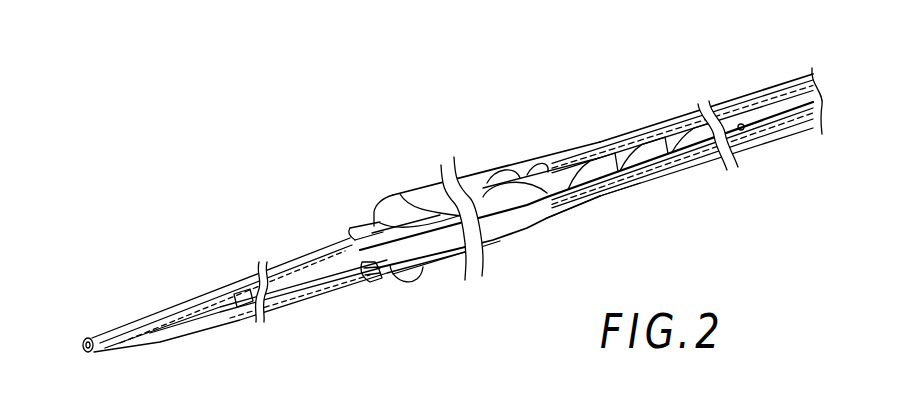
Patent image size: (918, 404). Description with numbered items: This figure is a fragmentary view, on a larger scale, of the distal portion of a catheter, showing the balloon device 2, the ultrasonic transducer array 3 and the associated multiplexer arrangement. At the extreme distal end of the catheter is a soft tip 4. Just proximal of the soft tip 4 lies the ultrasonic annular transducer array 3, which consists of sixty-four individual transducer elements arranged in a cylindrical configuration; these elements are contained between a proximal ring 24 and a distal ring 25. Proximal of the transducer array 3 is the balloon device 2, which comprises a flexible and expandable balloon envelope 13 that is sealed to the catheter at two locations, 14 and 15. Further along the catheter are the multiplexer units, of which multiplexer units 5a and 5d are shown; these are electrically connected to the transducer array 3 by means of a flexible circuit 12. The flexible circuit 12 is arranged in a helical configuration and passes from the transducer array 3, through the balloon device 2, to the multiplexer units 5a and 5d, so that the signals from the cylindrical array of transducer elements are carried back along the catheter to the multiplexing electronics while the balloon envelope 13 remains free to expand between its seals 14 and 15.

The balloon unit 2 is at (413, 185).
The ultrasonic annular transducer array 3 is at (320, 246).
The soft tip 4 is at (138, 318).
The multiplexer unit 5a is at (640, 155).
The multiplexer unit 5d is at (742, 123).
The flexible circuit 12 is at (507, 197).
The balloon envelope 13 is at (495, 262).
The seal 14 is at (378, 277).
The seal 15 is at (571, 207).
The proximal ring 24 is at (382, 273).
The distal ring 25 is at (312, 299).